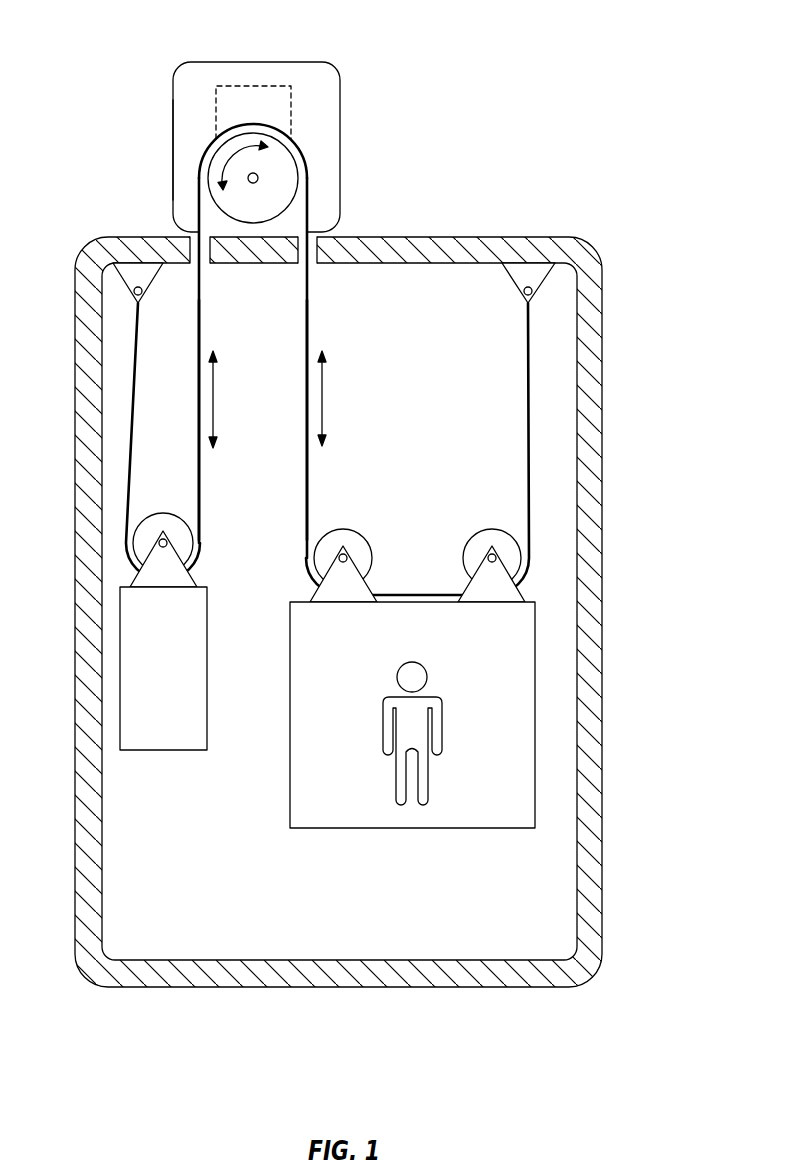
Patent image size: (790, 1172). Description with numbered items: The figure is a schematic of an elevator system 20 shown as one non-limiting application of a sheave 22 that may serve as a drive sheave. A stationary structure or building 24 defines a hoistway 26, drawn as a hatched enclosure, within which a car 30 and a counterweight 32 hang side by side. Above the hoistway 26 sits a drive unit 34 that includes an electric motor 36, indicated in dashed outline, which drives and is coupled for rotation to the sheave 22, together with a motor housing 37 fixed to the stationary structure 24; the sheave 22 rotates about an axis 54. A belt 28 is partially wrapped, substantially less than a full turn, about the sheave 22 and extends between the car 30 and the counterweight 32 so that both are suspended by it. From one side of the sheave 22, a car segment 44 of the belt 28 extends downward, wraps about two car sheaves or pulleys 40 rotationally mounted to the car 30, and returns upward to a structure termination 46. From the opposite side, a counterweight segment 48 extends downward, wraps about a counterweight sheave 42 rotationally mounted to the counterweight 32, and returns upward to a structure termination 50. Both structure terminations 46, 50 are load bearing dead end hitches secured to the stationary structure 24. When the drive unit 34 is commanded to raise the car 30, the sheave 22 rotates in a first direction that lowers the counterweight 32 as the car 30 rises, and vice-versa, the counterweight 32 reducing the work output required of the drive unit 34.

The elevator system 20 is at (570, 124).
The sheave 22 is at (296, 198).
The stationary structure or building 24 is at (603, 438).
The hoistway 26 is at (303, 903).
The belt 28 is at (308, 479).
The car 30 is at (418, 828).
The counterweight 32 is at (207, 703).
The drive unit 34 is at (339, 80).
The electric motor 36 is at (257, 85).
The motor support structure or motor housing 37 is at (172, 150).
The car sheave or pulley 40 is at (345, 528).
The counterweight sheave or pulley 42 is at (152, 515).
The car segment 44 is at (308, 315).
The structure termination 46 is at (510, 283).
The counterweight segment 48 is at (200, 323).
The structure termination 50 is at (143, 292).
The axis 54 is at (258, 176).